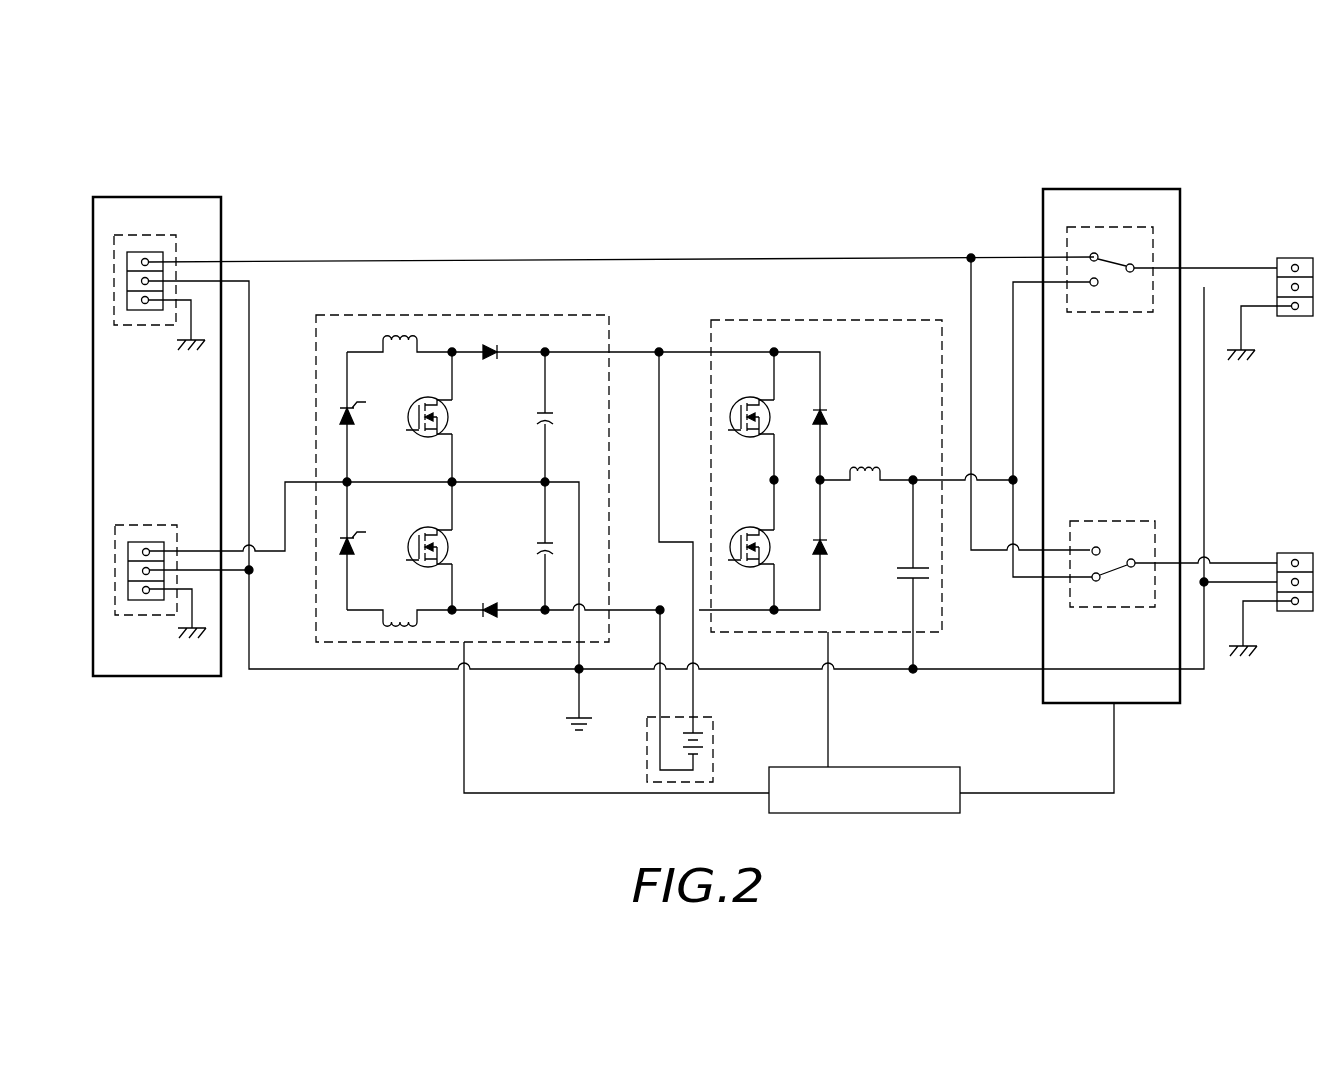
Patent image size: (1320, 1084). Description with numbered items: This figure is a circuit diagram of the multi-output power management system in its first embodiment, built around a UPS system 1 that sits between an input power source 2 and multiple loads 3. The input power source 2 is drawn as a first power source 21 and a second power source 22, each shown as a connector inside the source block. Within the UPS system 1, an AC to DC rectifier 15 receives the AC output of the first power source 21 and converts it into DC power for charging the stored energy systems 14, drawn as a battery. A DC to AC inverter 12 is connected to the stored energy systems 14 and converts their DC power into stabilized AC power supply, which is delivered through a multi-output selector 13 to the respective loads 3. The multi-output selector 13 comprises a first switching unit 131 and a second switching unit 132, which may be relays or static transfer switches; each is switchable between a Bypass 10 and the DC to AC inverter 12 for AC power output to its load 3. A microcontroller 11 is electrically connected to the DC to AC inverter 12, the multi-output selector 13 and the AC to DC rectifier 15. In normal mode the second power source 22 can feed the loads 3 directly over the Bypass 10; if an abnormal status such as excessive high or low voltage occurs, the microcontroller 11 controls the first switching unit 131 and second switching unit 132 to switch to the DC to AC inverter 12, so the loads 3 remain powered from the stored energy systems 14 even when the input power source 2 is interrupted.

The UPS system 1 is at (705, 240).
The input power source 2 is at (153, 197).
The loads 3 is at (1294, 258).
The Bypass 10 is at (638, 259).
The microcontroller 11 is at (866, 767).
The DC to AC inverter 12 is at (836, 320).
The multi-output selector 13 is at (1109, 189).
The stored energy systems 14 is at (705, 716).
The AC to DC rectifier 15 is at (437, 315).
The first power source 21 is at (146, 525).
The second power source 22 is at (166, 236).
The first switching unit 131 is at (1121, 521).
The second switching unit 132 is at (1075, 228).